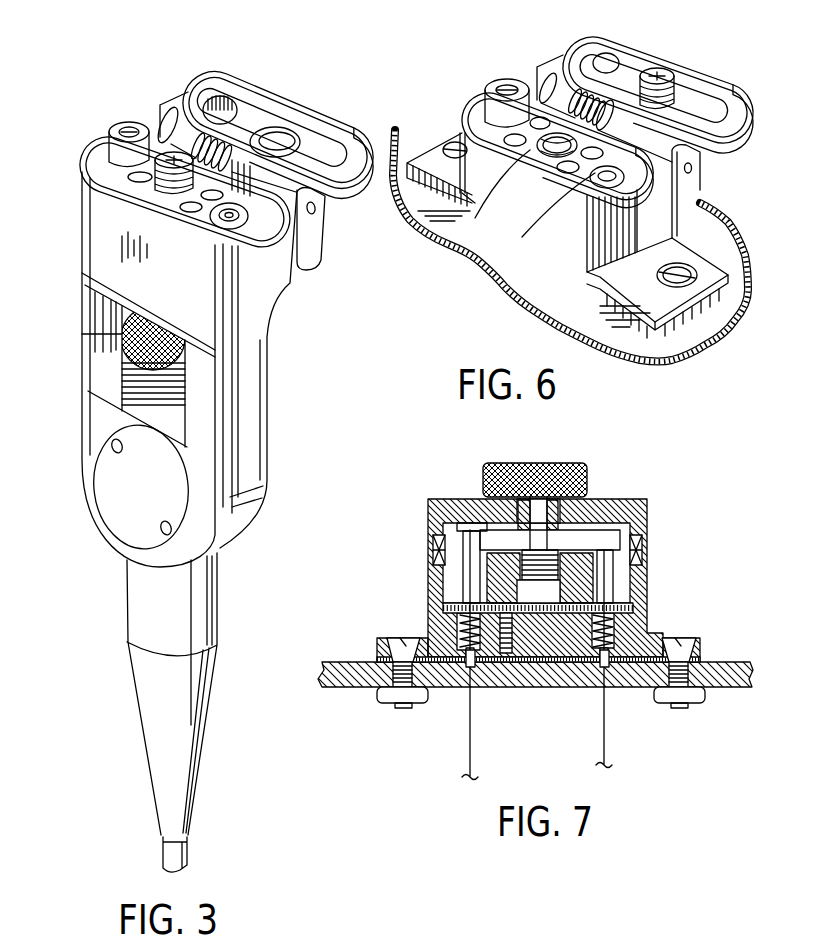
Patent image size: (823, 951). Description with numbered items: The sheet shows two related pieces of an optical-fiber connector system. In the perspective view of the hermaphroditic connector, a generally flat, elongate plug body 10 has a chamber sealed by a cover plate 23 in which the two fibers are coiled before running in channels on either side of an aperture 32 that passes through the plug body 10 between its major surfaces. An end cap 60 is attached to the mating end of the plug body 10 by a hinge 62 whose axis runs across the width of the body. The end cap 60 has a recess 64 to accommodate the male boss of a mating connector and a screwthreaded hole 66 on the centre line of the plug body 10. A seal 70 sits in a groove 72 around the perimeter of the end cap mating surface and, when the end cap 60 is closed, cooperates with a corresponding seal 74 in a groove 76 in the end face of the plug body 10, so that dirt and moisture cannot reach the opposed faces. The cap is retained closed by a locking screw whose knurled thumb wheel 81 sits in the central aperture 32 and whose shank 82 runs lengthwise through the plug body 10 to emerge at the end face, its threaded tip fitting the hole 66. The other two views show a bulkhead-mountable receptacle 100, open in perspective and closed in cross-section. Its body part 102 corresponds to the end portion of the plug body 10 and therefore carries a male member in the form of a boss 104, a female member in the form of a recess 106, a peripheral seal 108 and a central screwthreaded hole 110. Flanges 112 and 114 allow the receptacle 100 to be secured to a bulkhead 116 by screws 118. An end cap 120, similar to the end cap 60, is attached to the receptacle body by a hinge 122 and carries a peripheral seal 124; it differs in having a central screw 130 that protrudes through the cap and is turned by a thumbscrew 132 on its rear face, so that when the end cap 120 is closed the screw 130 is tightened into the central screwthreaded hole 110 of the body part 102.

In FIG. 3, the plug body 10 is at (258, 397).
In FIG. 3, the cover plate 23 is at (120, 498).
In FIG. 3, the aperture 32 is at (125, 396).
In FIG. 3, the end cap 60 is at (330, 218).
In FIG. 3, the hinge 62 is at (313, 215).
In FIG. 3, the recess 64 is at (226, 94).
In FIG. 3, the screwthreaded hole 66 is at (280, 137).
In FIG. 3, the seal 70 is at (205, 80).
In FIG. 3, the groove 72 is at (190, 96).
In FIG. 3, the seal 74 is at (108, 148).
In FIG. 3, the groove 76 is at (98, 153).
In FIG. 3, the knurled thumb wheel 81 is at (150, 336).
In FIG. 3, the shank 82 is at (157, 187).
In FIG. 6, the receptacle 100 is at (650, 17).
In FIG. 6, the body part 102 is at (563, 237).
In FIG. 7, the body part 102 is at (640, 585).
In FIG. 6, the boss 104 is at (493, 86).
In FIG. 7, the boss 104 is at (428, 507).
In FIG. 6, the recess 106 is at (542, 213).
In FIG. 7, the recess 106 is at (557, 527).
In FIG. 6, the peripheral seal 108 is at (683, 195).
In FIG. 7, the peripheral seal 108 is at (642, 563).
In FIG. 6, the screwthreaded hole 110 is at (517, 178).
In FIG. 6, the flange 112 is at (447, 135).
In FIG. 7, the flange 112 is at (377, 648).
In FIG. 6, the flange 114 is at (673, 316).
In FIG. 7, the flange 114 is at (700, 650).
In FIG. 7, the bulkhead 116 is at (336, 688).
In FIG. 6, the screws 118 is at (443, 150).
In FIG. 7, the screws 118 is at (401, 712).
In FIG. 6, the end cap 120 is at (705, 88).
In FIG. 6, the hinge 122 is at (698, 170).
In FIG. 6, the peripheral seal 124 is at (587, 50).
In FIG. 7, the peripheral seal 124 is at (621, 540).
In FIG. 6, the central screw 130 is at (667, 78).
In FIG. 7, the central screw 130 is at (548, 523).
In FIG. 7, the thumbscrew 132 is at (540, 463).